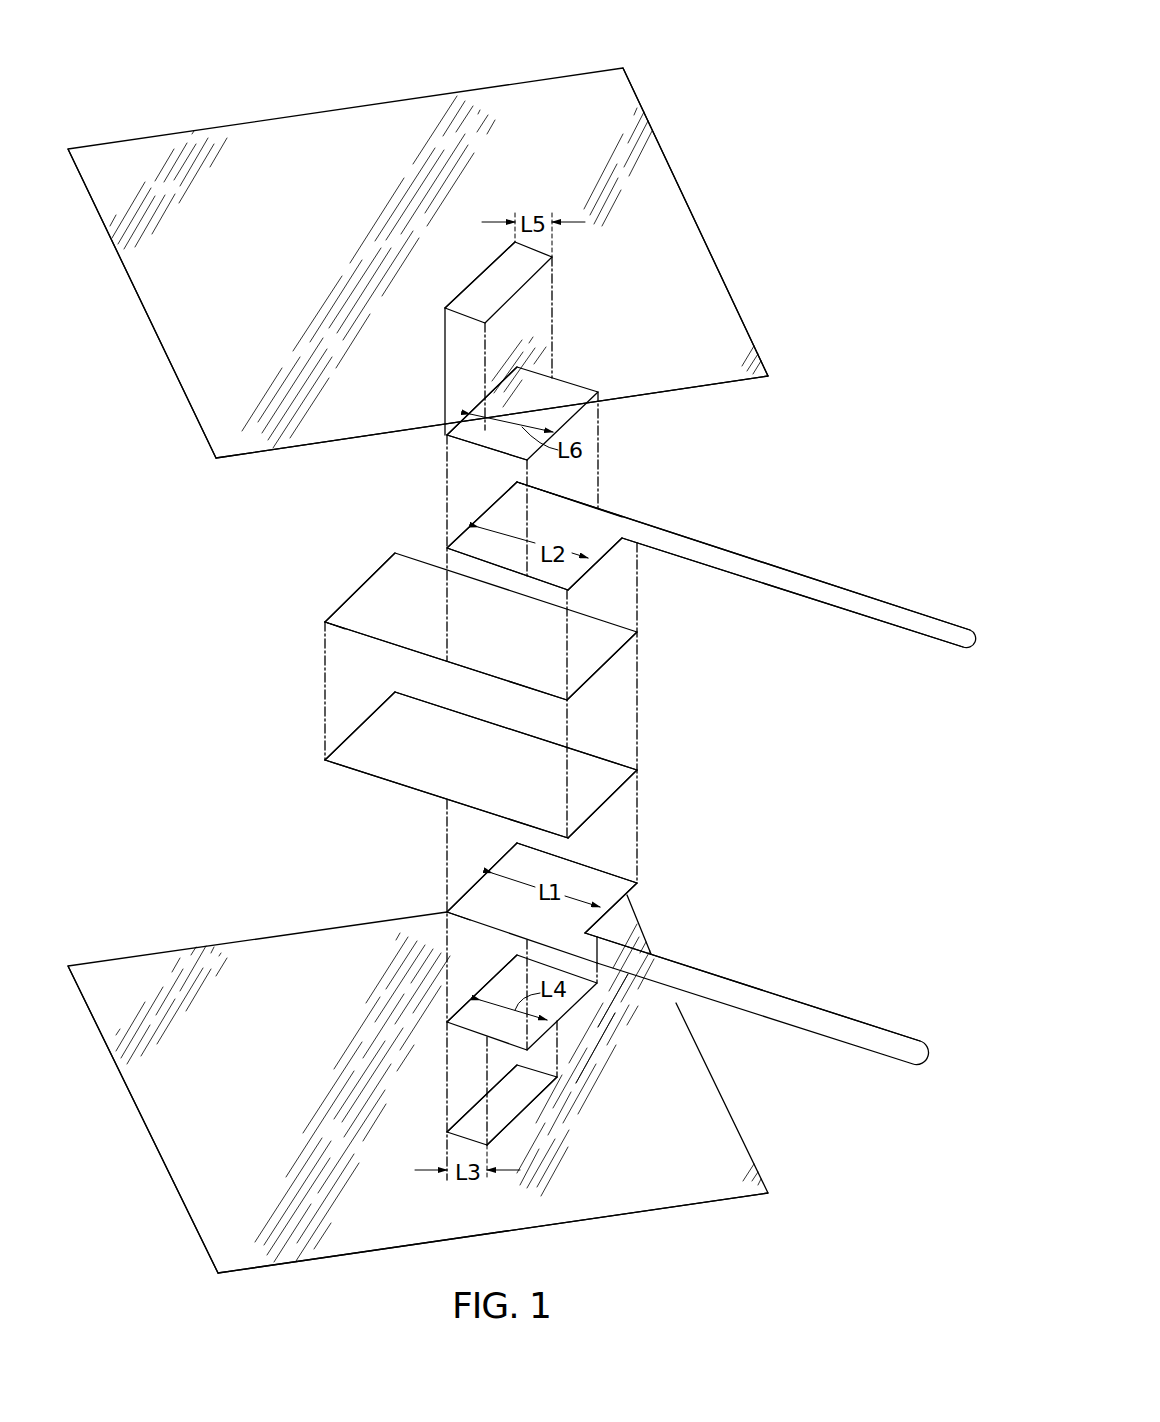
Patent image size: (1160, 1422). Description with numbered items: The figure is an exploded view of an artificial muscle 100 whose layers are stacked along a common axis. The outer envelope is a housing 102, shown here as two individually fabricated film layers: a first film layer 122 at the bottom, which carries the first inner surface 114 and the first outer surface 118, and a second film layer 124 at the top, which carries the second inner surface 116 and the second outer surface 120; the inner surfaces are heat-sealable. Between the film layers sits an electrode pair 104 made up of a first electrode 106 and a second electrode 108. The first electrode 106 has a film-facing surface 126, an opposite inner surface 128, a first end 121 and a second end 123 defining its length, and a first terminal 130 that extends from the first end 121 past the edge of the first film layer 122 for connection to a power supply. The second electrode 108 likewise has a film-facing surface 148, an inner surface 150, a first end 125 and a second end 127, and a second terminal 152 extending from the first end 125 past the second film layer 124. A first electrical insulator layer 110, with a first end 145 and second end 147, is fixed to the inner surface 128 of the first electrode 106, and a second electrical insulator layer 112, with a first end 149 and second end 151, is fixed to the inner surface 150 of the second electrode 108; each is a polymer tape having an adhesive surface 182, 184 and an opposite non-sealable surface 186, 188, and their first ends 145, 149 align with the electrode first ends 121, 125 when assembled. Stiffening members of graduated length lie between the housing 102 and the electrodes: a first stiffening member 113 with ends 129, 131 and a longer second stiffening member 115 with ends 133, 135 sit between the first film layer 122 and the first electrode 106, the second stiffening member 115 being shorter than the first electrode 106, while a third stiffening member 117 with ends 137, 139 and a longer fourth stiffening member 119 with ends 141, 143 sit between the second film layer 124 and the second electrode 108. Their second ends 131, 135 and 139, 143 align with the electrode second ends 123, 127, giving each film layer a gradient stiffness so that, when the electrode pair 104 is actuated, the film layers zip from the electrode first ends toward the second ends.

The artificial muscle 100 is at (884, 39).
The housing 102 is at (428, 238).
The electrode pair 104 is at (711, 565).
The first electrode 106 is at (693, 954).
The second electrode 108 is at (792, 637).
The first electrical insulator layer 110 is at (451, 777).
The second electrical insulator layer 112 is at (470, 616).
The first stiffening member 113 is at (543, 1125).
The first inner surface 114 is at (123, 960).
The second stiffening member 115 is at (632, 1057).
The second inner surface 116 is at (713, 378).
The third stiffening member 117 is at (488, 306).
The first outer surface 118 is at (310, 1260).
The fourth stiffening member 119 is at (452, 482).
The second outer surface 120 is at (705, 282).
The first end 121 is at (612, 905).
The first film layer 122 is at (143, 1119).
The second end 123 is at (487, 872).
The second film layer 124 is at (142, 303).
The first end 125 is at (598, 560).
The film-facing surface 126 is at (455, 912).
The second end 127 is at (480, 525).
The inner surface 128 is at (590, 867).
The first end 129 is at (520, 1113).
The first terminal 130 is at (713, 973).
The second end 131 is at (479, 1102).
The first end 133 is at (570, 1009).
The second end 135 is at (490, 981).
The first end 137 is at (503, 308).
The second end 139 is at (466, 290).
The first end 141 is at (576, 415).
The second end 143 is at (462, 414).
The first end 145 is at (636, 776).
The second end 147 is at (332, 736).
The film-facing surface 148 is at (556, 512).
The first end 149 is at (597, 675).
The inner surface 150 is at (507, 572).
The second end 151 is at (348, 597).
The second terminal 152 is at (760, 563).
The adhesive surface 182 is at (400, 784).
The adhesive surface 184 is at (336, 620).
The non-sealable surface 186 is at (438, 727).
The non-sealable surface 188 is at (372, 640).